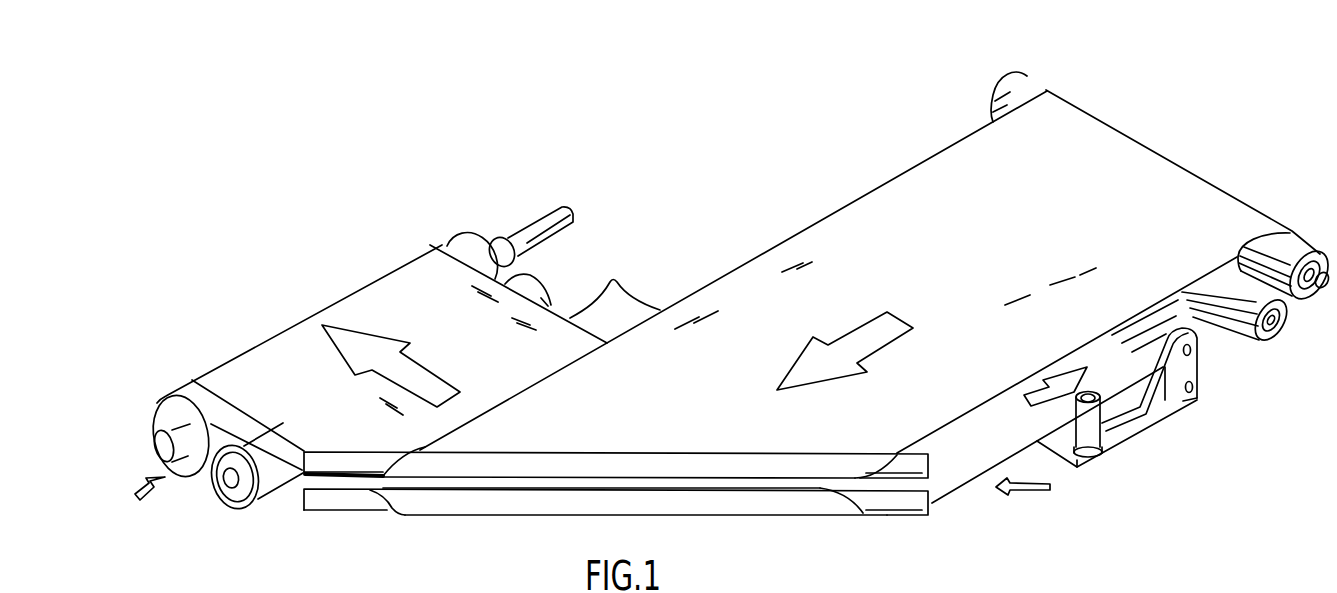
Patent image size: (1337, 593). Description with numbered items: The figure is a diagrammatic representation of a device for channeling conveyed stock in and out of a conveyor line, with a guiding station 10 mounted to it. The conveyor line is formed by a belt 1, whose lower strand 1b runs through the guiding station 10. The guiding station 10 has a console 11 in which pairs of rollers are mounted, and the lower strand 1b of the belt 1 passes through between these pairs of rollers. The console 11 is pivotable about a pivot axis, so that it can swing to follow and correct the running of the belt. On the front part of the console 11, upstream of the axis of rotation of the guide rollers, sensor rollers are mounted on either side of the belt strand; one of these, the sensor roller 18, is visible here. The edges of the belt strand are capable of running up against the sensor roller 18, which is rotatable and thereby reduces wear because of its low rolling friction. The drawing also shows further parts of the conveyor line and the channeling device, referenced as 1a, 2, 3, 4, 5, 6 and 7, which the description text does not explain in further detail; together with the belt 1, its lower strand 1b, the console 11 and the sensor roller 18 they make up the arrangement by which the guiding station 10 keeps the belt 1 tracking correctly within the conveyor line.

The belt 1 is at (1120, 150).
The belt transition (fold) zone 1a is at (614, 280).
The lower strand 1b is at (280, 447).
The upper guide plate 2 is at (370, 458).
The lower guide plate 3 is at (320, 510).
The deflection roller 4 is at (154, 413).
The roller 5 is at (1023, 80).
The roller 6 is at (1268, 342).
The roller 7 is at (240, 497).
The guiding station 10 is at (1190, 436).
The console 11 is at (1063, 460).
The sensor roller 18 is at (1110, 423).